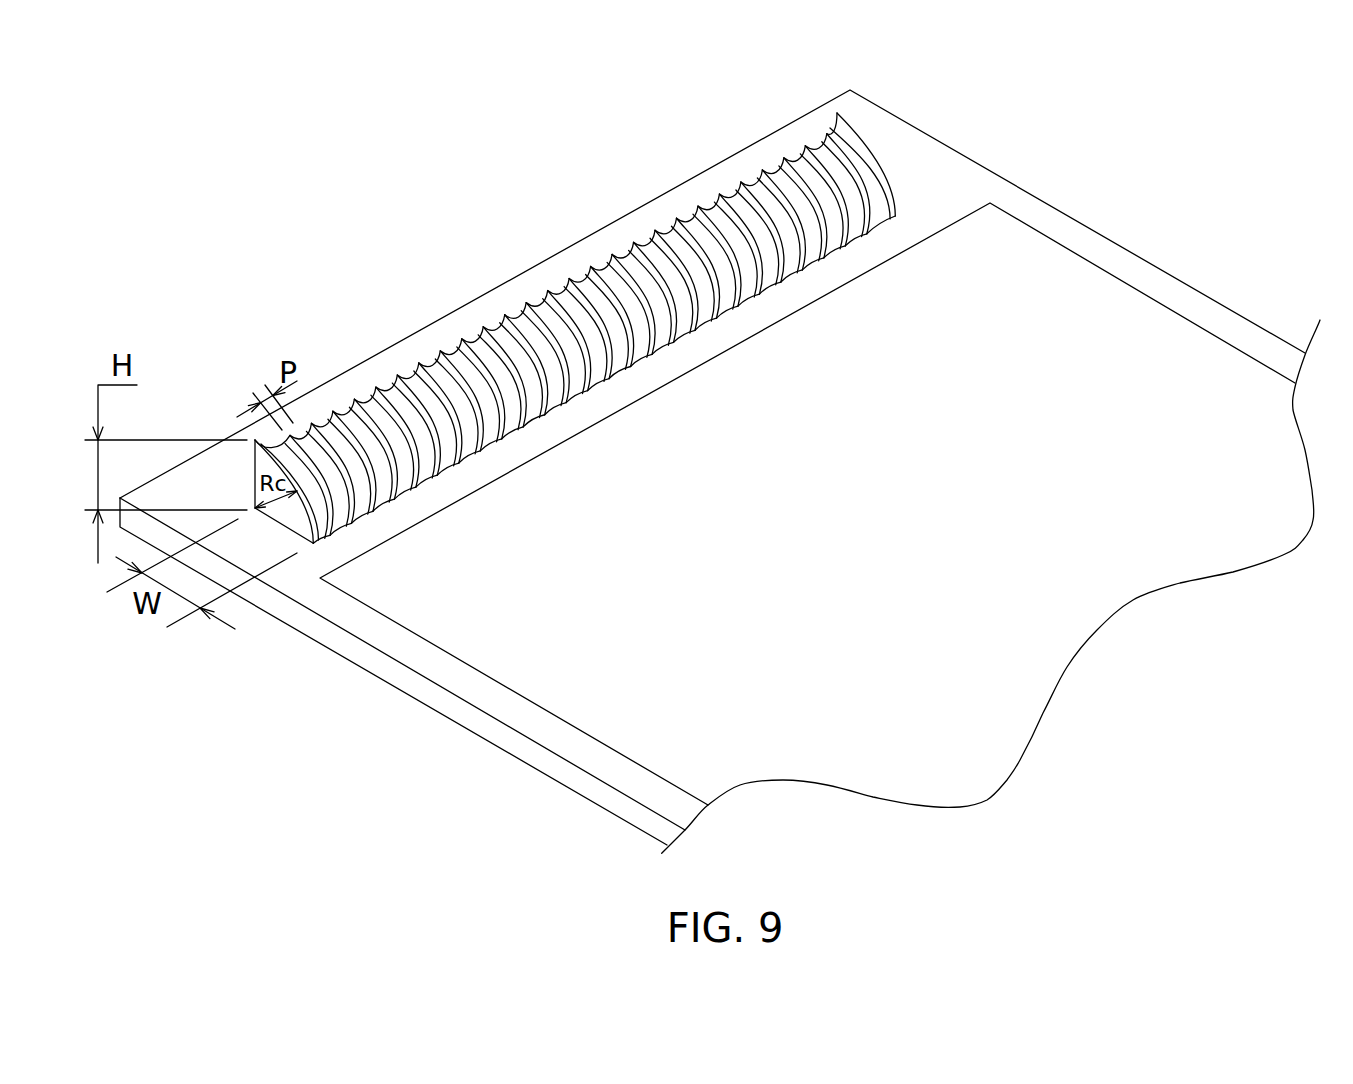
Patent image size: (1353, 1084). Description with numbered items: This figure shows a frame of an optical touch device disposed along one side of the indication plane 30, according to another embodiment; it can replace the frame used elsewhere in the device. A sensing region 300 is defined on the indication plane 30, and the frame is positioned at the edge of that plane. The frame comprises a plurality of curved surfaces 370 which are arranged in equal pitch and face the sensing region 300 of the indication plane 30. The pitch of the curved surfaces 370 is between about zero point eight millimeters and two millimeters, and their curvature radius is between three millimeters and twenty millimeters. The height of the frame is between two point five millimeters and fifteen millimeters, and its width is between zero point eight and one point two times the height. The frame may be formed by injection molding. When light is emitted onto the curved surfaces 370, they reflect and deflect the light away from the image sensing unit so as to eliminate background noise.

The indication plane 30 is at (977, 166).
The sensing region 300 is at (1153, 357).
The curved surfaces 370 is at (384, 390).